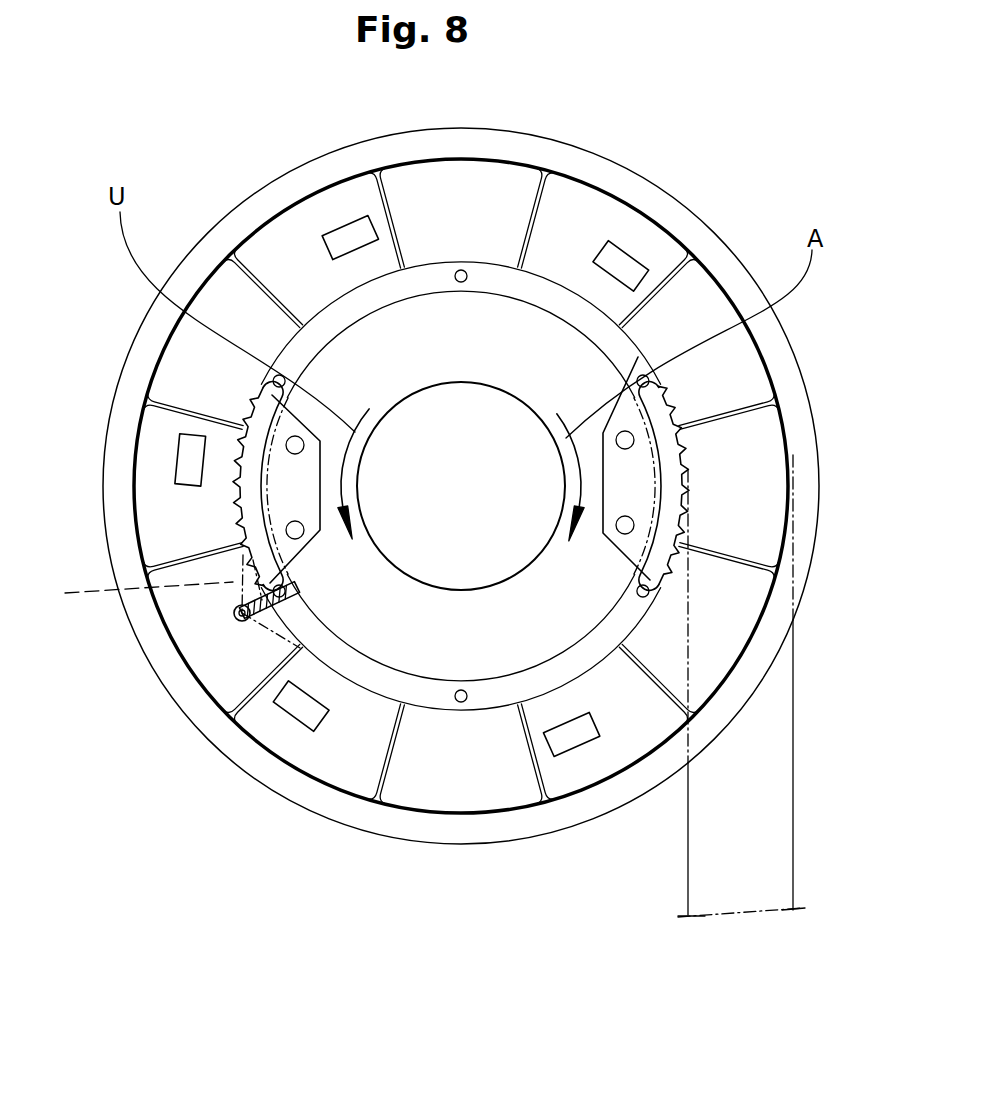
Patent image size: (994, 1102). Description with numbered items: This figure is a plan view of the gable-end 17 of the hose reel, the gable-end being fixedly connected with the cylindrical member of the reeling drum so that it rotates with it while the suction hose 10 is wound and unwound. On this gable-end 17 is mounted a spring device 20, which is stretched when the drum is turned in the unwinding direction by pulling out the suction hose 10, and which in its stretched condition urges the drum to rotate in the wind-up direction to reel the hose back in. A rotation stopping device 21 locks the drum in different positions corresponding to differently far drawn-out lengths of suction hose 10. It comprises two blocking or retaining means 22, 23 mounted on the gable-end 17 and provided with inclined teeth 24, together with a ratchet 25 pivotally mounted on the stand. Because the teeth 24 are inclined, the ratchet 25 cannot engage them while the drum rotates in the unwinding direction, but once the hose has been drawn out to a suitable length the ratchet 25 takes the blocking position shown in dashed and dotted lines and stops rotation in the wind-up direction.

The suction hose 10 is at (697, 865).
The gable-end 17 is at (597, 220).
The spring device 20 is at (330, 318).
The rotation stopping device 21 is at (192, 603).
The blocking means 22 is at (283, 490).
The blocking means 23 is at (640, 472).
The inclined teeth 24 is at (234, 480).
The ratchet 25 is at (290, 598).